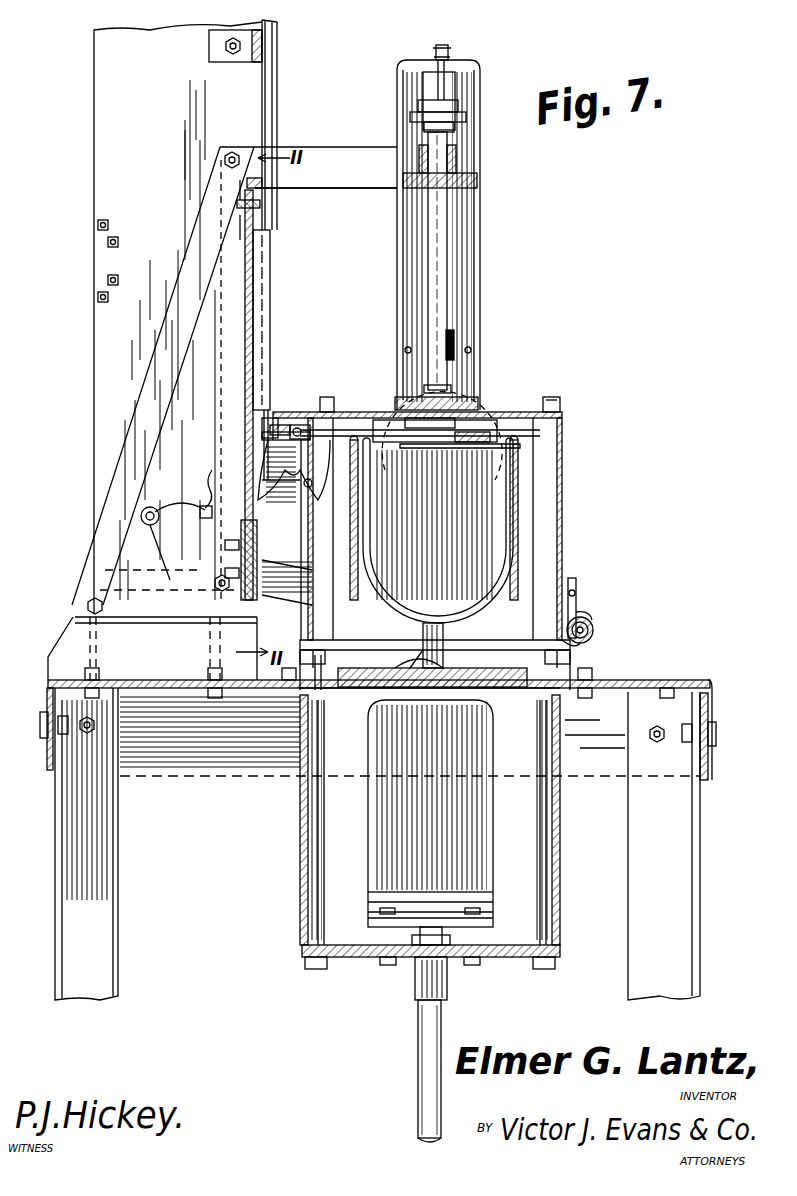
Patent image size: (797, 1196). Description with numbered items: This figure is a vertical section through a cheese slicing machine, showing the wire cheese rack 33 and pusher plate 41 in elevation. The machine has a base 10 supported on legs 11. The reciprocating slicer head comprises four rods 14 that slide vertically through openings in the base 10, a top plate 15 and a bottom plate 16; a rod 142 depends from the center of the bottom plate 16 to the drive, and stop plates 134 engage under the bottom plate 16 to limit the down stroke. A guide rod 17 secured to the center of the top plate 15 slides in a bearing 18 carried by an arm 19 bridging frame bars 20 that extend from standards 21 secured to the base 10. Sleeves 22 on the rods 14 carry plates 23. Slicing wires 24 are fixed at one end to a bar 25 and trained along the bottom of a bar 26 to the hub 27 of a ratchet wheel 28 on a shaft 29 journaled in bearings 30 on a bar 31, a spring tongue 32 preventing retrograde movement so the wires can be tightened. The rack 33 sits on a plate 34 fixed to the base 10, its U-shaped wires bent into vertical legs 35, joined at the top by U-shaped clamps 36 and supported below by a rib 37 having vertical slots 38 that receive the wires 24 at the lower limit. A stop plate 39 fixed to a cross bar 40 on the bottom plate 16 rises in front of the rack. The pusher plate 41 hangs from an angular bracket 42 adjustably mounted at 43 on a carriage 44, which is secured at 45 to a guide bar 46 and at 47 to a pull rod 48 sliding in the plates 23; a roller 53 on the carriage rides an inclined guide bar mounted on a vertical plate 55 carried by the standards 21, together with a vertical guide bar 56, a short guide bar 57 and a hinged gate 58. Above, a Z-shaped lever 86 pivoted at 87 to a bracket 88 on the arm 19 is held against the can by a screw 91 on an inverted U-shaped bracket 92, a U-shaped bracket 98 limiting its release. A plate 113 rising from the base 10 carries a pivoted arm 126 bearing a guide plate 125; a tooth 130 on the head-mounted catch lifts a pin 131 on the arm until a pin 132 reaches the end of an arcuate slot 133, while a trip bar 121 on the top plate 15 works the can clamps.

The base 10 is at (178, 680).
The legs 11 is at (103, 903).
The rods 14 is at (304, 808).
The top plate 15 is at (513, 412).
The bottom plate 16 is at (356, 957).
The guide rod 17 is at (440, 272).
The bearing 18 is at (456, 166).
The arm 19 is at (462, 186).
The frame bars 20 is at (345, 196).
The standards 21 is at (245, 336).
The sleeves 22 is at (322, 548).
The plates 23 is at (520, 478).
The slicing wires 24 is at (378, 668).
The bar 25 is at (312, 650).
The bar 26 is at (560, 650).
The hub 27 is at (593, 636).
The ratchet wheel 28 is at (588, 626).
The shaft 29 is at (588, 642).
The bearings 30 is at (590, 622).
The bar 31 is at (578, 582).
The spring tongue 32 is at (576, 612).
The wire cheese rack 33 is at (523, 553).
The plate 34 is at (462, 680).
The vertical legs 35 is at (345, 568).
The U-shaped clamps 36 is at (355, 440).
The rib 37 is at (445, 642).
The vertical slots 38 is at (425, 672).
The stop plate 39 is at (470, 810).
The cross bar 40 is at (380, 934).
The pusher plate 41 is at (500, 500).
The angular bracket 42 is at (410, 420).
The adjustable mounting 43 is at (410, 400).
The carriage 44 is at (348, 412).
The adjustable connection 45 is at (500, 432).
The guide bar 46 is at (478, 412).
The adjustable connection 47 is at (296, 425).
The pull rod 48 is at (304, 412).
The roller 53 is at (262, 436).
The vertical plate 55 is at (246, 276).
The vertically disposed guide bar 56 is at (264, 283).
The short vertically disposed guide bar 57 is at (262, 425).
The gate 58 is at (262, 362).
The Z-shaped lever 86 is at (435, 104).
The pivot 87 is at (420, 114).
The bracket 88 is at (452, 108).
The screw 91 is at (440, 88).
The inverted U-shaped bracket 92 is at (465, 243).
The U-shaped bracket 98 is at (458, 340).
The plate 113 is at (94, 140).
The trip bar 121 is at (272, 82).
The guide plate 125 is at (160, 585).
The arm 126 is at (262, 486).
The tooth 130 is at (318, 492).
The pin 131 is at (305, 480).
The pin 132 is at (208, 518).
The arcuate slot 133 is at (208, 490).
The stop plates 134 is at (302, 858).
The rod 142 is at (418, 1066).